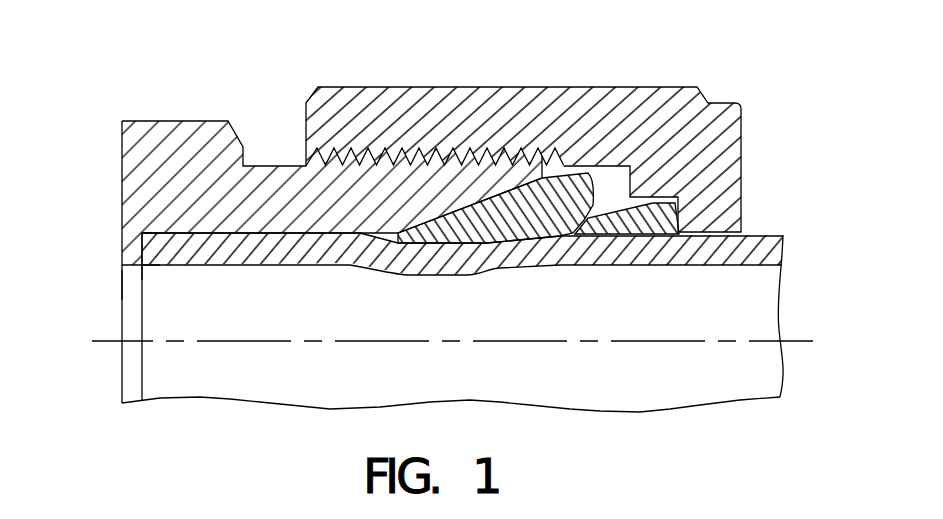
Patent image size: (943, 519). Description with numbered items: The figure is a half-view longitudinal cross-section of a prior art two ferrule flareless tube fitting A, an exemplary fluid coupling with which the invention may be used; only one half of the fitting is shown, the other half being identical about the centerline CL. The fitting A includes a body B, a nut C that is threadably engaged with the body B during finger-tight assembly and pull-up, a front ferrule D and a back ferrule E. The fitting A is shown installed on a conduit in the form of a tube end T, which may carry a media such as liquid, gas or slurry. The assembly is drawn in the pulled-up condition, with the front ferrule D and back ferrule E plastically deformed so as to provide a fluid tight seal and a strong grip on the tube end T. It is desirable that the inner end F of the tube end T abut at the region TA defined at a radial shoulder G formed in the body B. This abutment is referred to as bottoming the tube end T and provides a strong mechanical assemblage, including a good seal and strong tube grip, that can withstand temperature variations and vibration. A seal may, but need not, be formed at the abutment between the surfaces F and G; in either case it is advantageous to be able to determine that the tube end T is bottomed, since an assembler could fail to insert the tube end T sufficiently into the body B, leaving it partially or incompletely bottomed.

The two ferrule tube fitting A is at (494, 58).
The body B is at (185, 118).
The nut C is at (670, 87).
The front ferrule D is at (458, 240).
The back ferrule E is at (597, 240).
The inner end of the tube end F is at (143, 258).
The radial shoulder G is at (146, 256).
The tube end T is at (757, 233).
The abutment region TA is at (103, 277).
The centerline CL is at (677, 341).